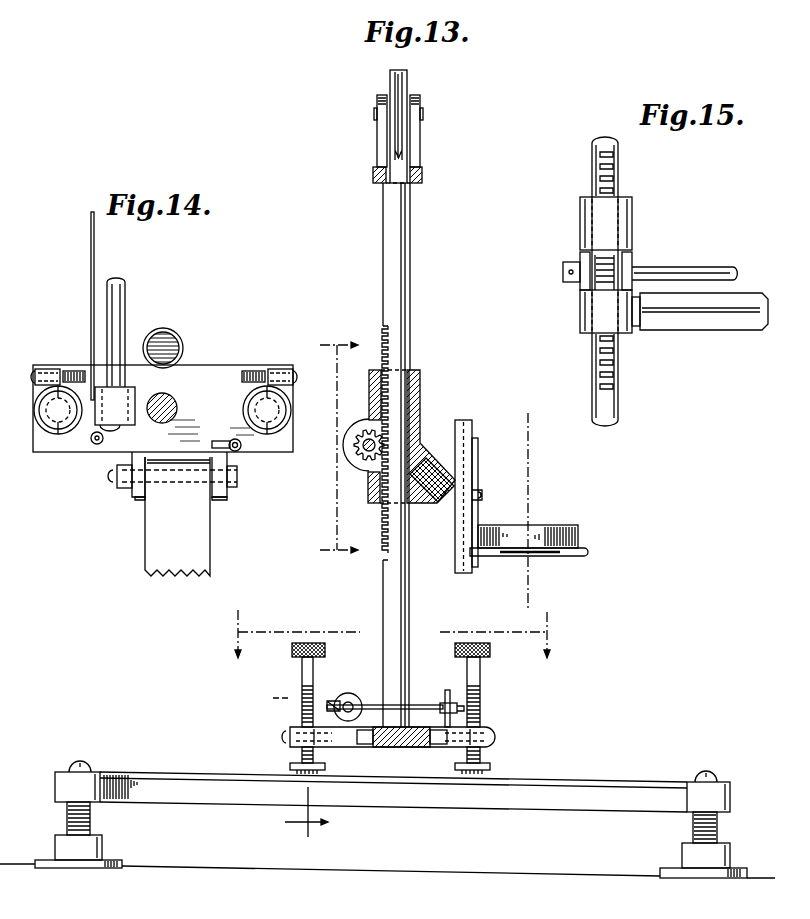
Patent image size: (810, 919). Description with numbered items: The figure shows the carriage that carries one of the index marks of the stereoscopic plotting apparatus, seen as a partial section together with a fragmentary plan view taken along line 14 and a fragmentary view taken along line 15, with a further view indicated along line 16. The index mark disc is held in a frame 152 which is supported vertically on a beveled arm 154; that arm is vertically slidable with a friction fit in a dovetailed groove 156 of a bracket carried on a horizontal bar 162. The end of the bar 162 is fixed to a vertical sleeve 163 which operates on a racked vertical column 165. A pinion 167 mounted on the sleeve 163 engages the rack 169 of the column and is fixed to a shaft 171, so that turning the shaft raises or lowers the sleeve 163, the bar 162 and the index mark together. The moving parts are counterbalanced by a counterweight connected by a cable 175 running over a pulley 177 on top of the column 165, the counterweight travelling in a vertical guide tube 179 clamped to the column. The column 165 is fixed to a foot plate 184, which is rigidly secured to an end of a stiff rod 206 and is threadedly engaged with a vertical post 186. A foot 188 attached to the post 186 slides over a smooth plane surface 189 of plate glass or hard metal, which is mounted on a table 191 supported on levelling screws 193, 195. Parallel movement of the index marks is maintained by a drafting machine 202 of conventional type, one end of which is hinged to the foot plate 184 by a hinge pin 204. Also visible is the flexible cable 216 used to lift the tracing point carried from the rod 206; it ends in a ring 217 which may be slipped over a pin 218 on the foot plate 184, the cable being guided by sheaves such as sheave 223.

In FIG. 13, the section line 14— 14 is at (392, 634).
In FIG. 13, the section line 15— 15 is at (339, 447).
In FIG. 13, the section line 16- 16 is at (289, 771).
In FIG. 13, the frame 152 is at (582, 547).
In FIG. 13, the beveled arm 154 is at (479, 472).
In FIG. 13, the dovetailed groove 156 is at (472, 424).
In FIG. 13, the horizontal bar 162 is at (448, 497).
In FIG. 15, the horizontal bar 162 is at (712, 320).
In FIG. 13, the vertical sleeve 163 is at (421, 388).
In FIG. 15, the vertical sleeve 163 is at (632, 217).
In FIG. 13, the racked vertical column 165 is at (412, 255).
In FIG. 14, the racked vertical column 165 is at (175, 403).
In FIG. 15, the racked vertical column 165 is at (592, 162).
In FIG. 13, the pinion 167 is at (355, 460).
In FIG. 15, the pinion 167 is at (579, 289).
In FIG. 13, the rack 169 is at (386, 334).
In FIG. 15, the rack 169 is at (613, 170).
In FIG. 13, the shaft 171 is at (367, 455).
In FIG. 15, the shaft 171 is at (697, 268).
In FIG. 13, the cable 175 is at (396, 70).
In FIG. 13, the pulley 177 is at (407, 92).
In FIG. 14, the vertical guide tube 179 is at (180, 337).
In FIG. 13, the foot plate 184 is at (493, 740).
In FIG. 14, the foot plate 184 is at (230, 372).
In FIG. 13, the vertical post 186 is at (302, 662).
In FIG. 14, the vertical post 186 is at (52, 426).
In FIG. 13, the foot 188 is at (290, 769).
In FIG. 13, the plane surface 189 is at (607, 778).
In FIG. 13, the table 191 is at (407, 803).
In FIG. 13, the levelling screw 193 is at (690, 823).
In FIG. 13, the levelling screw 195 is at (92, 832).
In FIG. 14, the drafting machine 202 is at (155, 547).
In FIG. 13, the hinge pin 204 is at (441, 748).
In FIG. 14, the hinge pin 204 is at (235, 500).
In FIG. 13, the stiff rod 206 is at (350, 706).
In FIG. 14, the stiff rod 206 is at (125, 298).
In FIG. 13, the flexible cable 216 is at (414, 705).
In FIG. 14, the flexible cable 216 is at (90, 233).
In FIG. 13, the ring 217 is at (464, 708).
In FIG. 14, the ring 217 is at (213, 441).
In FIG. 13, the pin 218 is at (446, 695).
In FIG. 14, the pin 218 is at (236, 451).
In FIG. 13, the sheave 223 is at (332, 702).
In FIG. 14, the sheave 223 is at (93, 447).